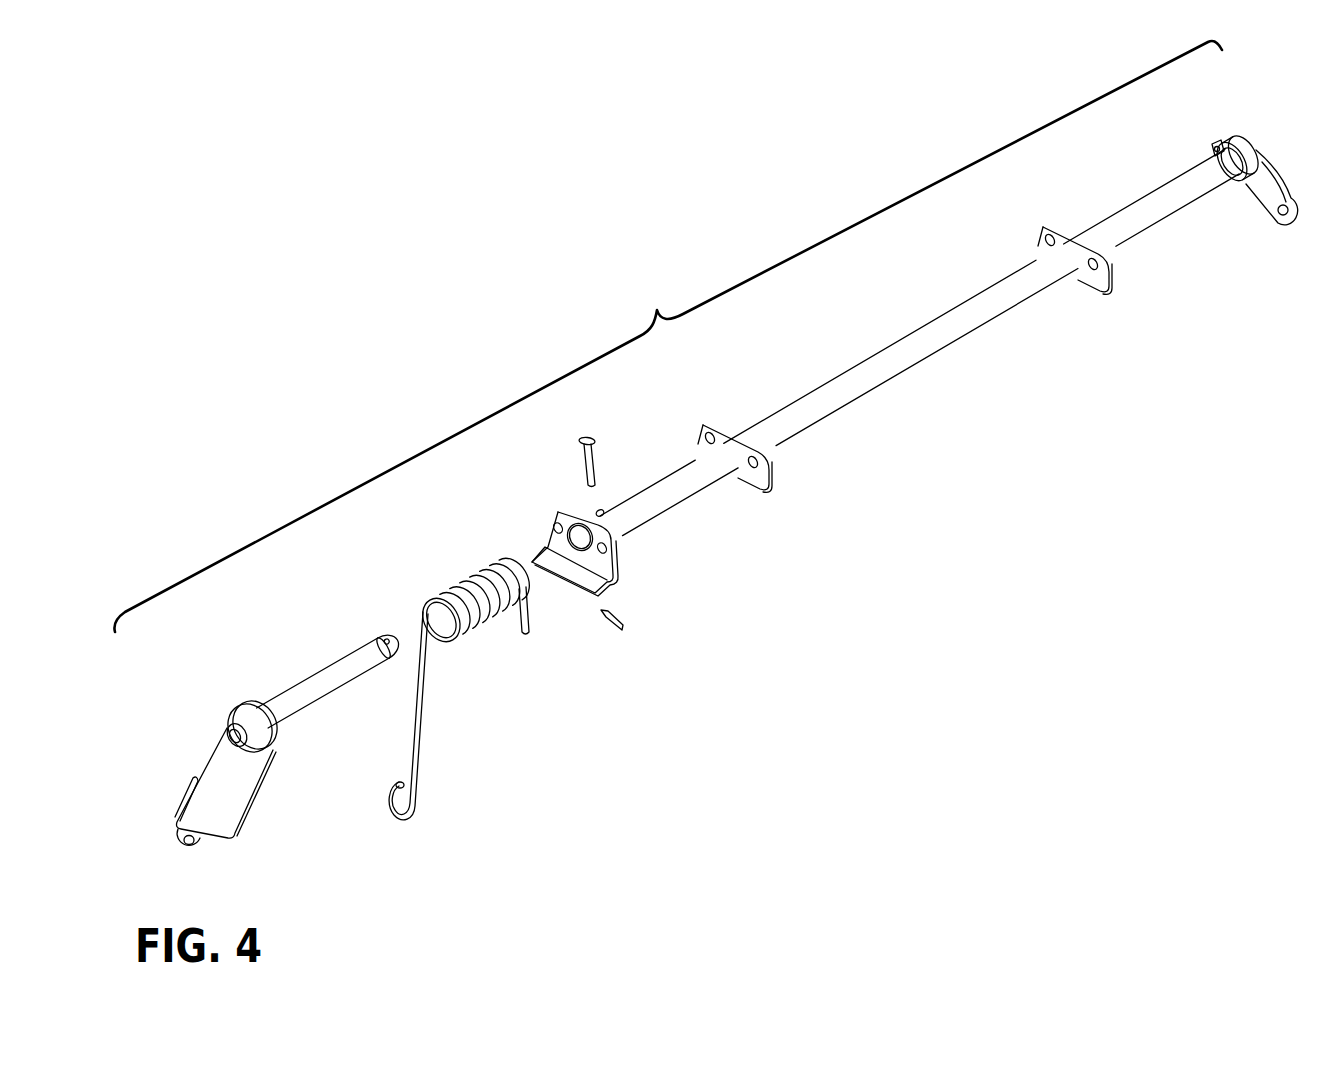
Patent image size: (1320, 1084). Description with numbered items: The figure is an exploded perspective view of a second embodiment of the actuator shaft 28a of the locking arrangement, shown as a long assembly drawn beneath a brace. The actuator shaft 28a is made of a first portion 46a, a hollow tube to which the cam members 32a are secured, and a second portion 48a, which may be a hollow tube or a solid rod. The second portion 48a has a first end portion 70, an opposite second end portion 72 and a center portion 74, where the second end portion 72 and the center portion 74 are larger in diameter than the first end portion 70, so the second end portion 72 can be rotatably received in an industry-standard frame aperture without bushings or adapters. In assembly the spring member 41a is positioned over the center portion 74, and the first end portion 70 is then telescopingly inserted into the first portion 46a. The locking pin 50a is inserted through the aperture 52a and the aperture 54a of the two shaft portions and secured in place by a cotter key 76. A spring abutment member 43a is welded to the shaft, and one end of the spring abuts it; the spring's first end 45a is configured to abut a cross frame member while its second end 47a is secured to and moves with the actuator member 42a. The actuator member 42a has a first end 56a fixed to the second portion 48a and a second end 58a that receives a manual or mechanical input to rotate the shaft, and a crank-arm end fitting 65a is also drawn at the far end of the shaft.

The actuator shaft 28a is at (668, 336).
The cam member 32a is at (714, 425).
The spring member 41a is at (488, 661).
The actuator member 42a is at (209, 802).
The spring abutment member 43a is at (612, 567).
The first end of the spring member 45a is at (525, 620).
The first portion of the actuator shaft 46a is at (868, 360).
The second end of the spring member 47a is at (420, 753).
The second portion of the actuator shaft 48a is at (314, 661).
The locking pin 50a is at (586, 463).
The aperture of the second portion 52a is at (386, 641).
The aperture of the first portion 54a is at (597, 512).
The first end of the actuator member 56a is at (275, 748).
The second end of the actuator member 58a is at (188, 843).
The crank arm 65a is at (1249, 134).
The first end portion 70 is at (388, 645).
The second end portion 72 is at (239, 722).
The center portion 74 is at (323, 683).
The cotter key 76 is at (610, 612).